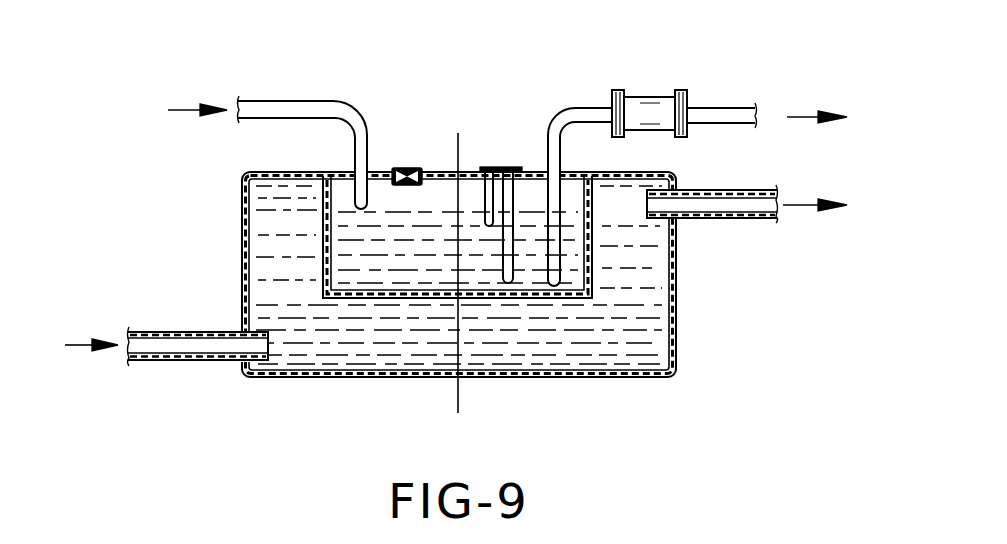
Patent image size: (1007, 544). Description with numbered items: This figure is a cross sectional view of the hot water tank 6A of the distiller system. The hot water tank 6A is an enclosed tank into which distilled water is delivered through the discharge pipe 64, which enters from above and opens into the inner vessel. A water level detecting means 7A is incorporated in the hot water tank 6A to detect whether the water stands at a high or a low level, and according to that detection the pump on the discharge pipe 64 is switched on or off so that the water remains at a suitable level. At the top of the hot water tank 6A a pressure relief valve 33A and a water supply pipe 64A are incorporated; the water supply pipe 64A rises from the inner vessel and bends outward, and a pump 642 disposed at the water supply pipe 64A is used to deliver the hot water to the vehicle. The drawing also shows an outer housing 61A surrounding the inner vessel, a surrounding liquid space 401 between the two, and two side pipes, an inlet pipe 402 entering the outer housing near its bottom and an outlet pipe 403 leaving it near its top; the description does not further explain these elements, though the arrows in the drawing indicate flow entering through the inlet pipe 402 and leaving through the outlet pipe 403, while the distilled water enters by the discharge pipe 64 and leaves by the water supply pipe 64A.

The outer tank housing 61A is at (625, 378).
The outer chamber liquid 401 is at (352, 350).
The hot water tank 6A is at (478, 298).
The water level detecting means 7A is at (502, 167).
The pressure relief valve 33A is at (413, 167).
The discharge pipe 64 is at (295, 112).
The water supply pipe 64A is at (573, 108).
The pump 642 is at (650, 112).
The inlet pipe to outer tank 402 is at (177, 347).
The outlet pipe from outer tank 403 is at (717, 205).